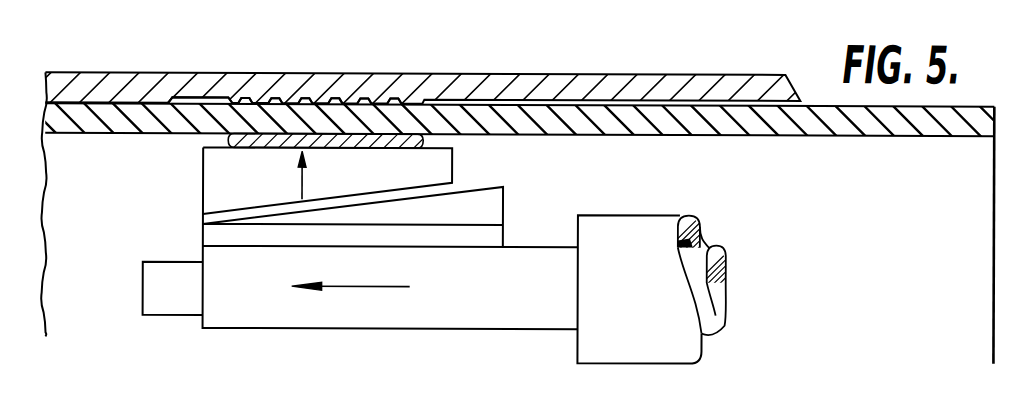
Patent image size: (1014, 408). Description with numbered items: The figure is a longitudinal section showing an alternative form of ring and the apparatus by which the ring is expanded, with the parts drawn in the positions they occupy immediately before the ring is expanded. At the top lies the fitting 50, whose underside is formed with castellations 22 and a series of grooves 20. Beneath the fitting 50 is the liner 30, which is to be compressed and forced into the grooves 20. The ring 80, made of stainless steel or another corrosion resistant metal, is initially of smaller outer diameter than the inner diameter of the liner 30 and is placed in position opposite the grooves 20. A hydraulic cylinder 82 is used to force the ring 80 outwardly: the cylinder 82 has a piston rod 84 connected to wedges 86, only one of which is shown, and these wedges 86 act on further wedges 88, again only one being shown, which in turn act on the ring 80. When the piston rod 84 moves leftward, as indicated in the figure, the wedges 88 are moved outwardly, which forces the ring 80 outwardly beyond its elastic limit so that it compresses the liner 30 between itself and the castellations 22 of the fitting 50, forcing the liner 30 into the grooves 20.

The fitting 50 is at (77, 82).
The castellations 22 is at (238, 100).
The grooves 20 is at (257, 98).
The ring 80 is at (357, 137).
The liner 30 is at (120, 123).
The further wedges 88 is at (215, 176).
The wedges 86 is at (493, 197).
The piston rod 84 is at (517, 297).
The hydraulic cylinder 82 is at (632, 227).